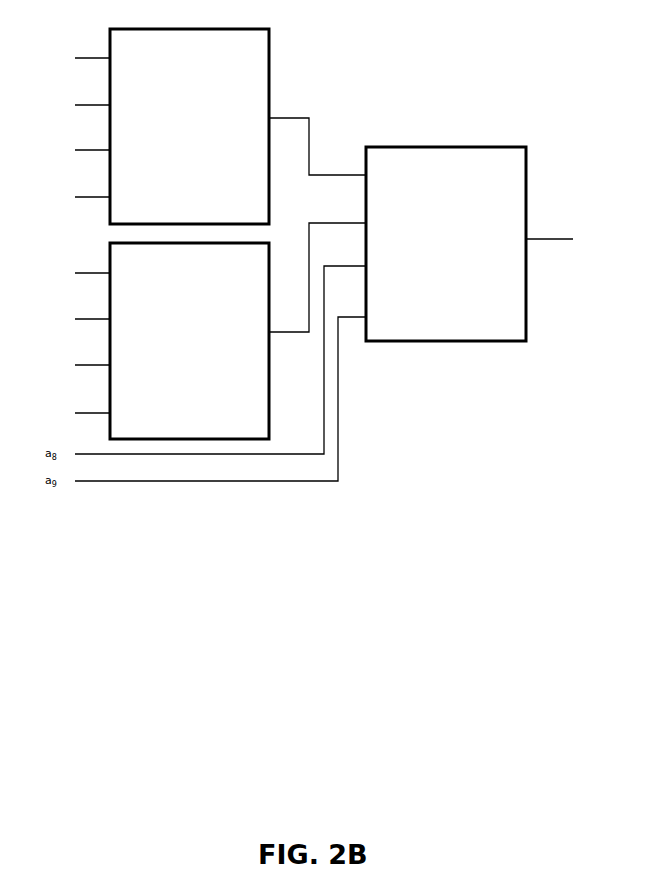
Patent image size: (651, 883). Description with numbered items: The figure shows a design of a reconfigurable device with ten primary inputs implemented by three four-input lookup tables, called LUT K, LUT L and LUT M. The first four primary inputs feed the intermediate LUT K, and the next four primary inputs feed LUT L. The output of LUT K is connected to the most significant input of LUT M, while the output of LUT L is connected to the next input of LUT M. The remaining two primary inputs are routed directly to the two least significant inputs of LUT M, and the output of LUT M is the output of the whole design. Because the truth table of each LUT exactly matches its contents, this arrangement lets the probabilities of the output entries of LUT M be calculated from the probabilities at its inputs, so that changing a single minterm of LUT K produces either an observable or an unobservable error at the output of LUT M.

The 4-input LUT K is at (205, 126).
The 4-input LUT L is at (205, 331).
The 4-input LUT M is at (469, 244).